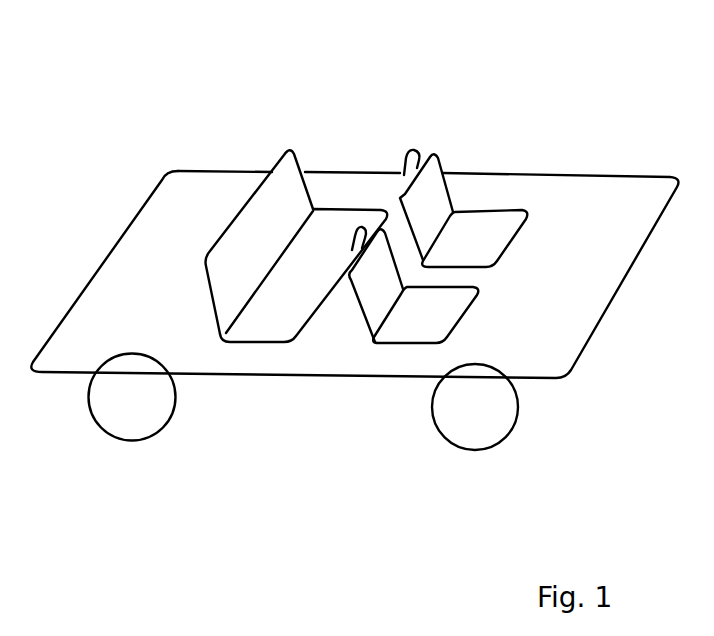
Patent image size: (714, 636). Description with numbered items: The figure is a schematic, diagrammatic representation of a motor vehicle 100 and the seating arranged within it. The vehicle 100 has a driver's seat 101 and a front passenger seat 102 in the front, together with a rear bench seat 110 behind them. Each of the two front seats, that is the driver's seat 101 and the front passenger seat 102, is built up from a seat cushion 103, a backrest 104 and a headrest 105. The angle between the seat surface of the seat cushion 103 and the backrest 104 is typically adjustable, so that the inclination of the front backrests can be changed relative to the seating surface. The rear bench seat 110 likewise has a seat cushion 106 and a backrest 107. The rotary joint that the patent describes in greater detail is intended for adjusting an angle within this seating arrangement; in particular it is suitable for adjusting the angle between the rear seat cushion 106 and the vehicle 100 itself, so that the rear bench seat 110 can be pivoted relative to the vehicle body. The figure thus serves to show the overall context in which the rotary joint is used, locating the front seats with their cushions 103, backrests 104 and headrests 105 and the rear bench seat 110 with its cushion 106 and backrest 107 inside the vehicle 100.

The motor vehicle 100 is at (354, 316).
The driver's seat 101 is at (354, 272).
The front passenger seat 102 is at (384, 394).
The seat cushion 103 is at (508, 223).
The backrest 104 is at (443, 173).
The headrest 105 is at (415, 162).
The seat cushion 106 is at (335, 222).
The backrest 107 is at (292, 186).
The rear bench seat 110 is at (218, 393).